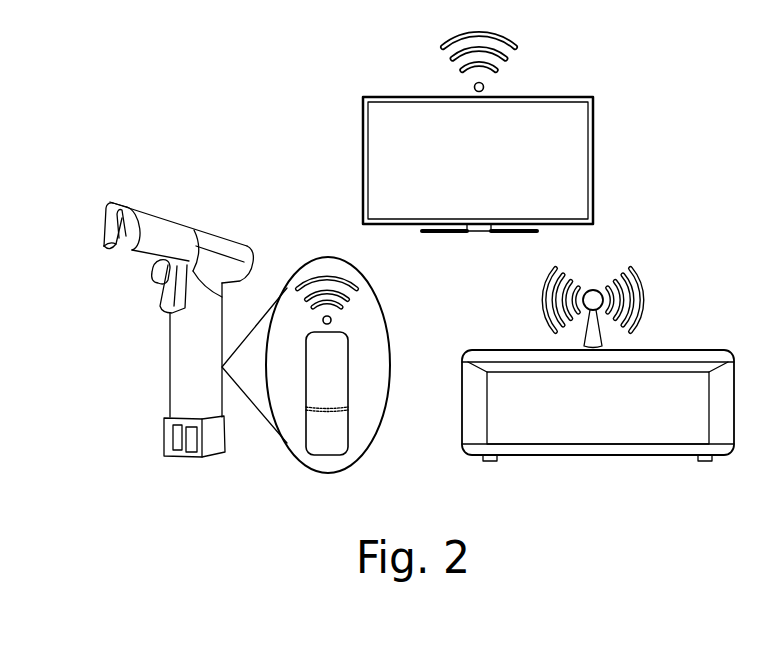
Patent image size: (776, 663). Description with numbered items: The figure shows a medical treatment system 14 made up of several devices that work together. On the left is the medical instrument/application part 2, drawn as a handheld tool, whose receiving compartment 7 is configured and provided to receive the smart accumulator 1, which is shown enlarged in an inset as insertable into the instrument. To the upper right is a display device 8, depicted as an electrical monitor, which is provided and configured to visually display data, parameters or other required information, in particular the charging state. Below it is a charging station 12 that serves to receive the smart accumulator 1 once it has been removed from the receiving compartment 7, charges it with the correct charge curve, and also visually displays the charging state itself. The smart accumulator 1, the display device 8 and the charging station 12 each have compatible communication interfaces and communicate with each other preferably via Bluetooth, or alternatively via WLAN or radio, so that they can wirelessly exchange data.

The medical treatment system 14 is at (180, 133).
The instrument/application part 2 is at (208, 203).
The receiving compartment 7 is at (170, 358).
The smart accumulator 1 is at (355, 412).
The display device 8 is at (603, 90).
The charging station 12 is at (715, 342).